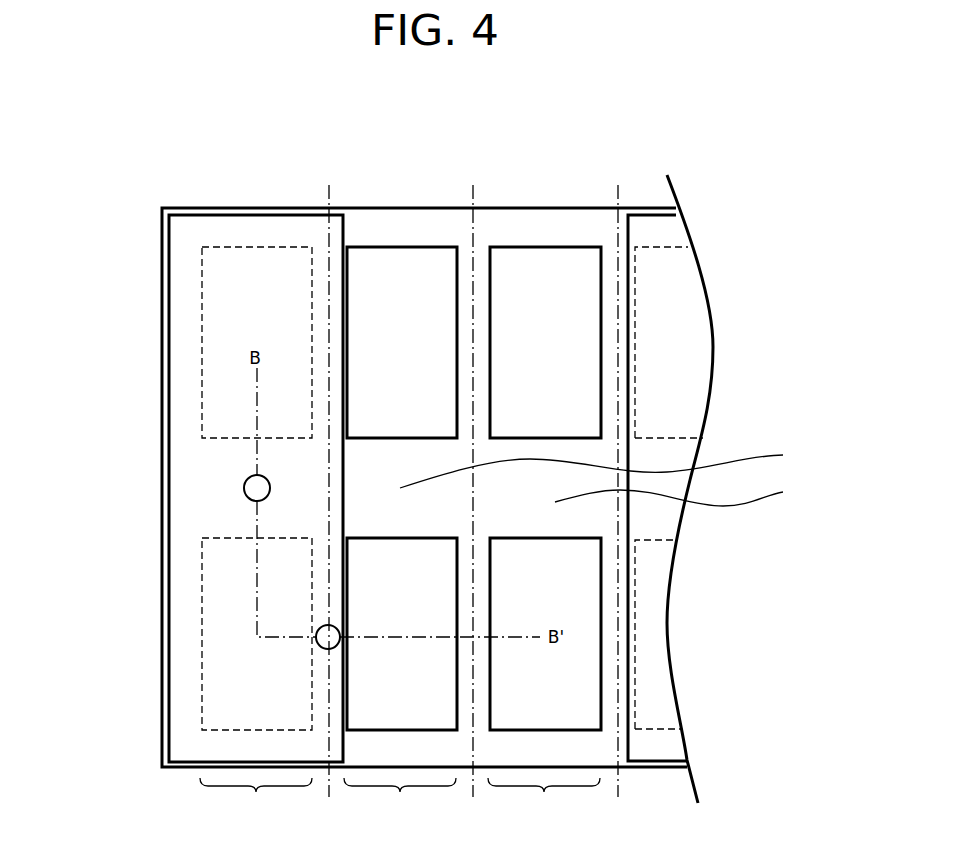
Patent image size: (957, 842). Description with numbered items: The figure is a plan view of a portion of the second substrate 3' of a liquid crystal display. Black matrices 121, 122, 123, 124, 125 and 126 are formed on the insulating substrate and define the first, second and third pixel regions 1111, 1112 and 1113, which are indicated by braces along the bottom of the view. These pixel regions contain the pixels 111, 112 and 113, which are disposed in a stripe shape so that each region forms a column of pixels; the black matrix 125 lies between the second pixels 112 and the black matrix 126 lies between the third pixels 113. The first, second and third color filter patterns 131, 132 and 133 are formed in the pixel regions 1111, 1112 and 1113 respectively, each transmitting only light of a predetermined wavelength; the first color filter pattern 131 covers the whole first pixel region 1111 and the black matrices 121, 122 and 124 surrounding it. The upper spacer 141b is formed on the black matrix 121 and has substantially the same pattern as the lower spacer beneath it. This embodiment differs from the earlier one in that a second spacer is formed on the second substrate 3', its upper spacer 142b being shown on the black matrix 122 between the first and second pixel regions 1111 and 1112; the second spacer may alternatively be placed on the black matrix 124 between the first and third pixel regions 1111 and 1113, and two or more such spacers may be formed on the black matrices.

The second substrate 3' is at (78, 108).
The pixel 111 is at (240, 322).
The second pixel 112 is at (383, 323).
The third pixel 113 is at (528, 323).
The black matrix 121 is at (213, 453).
The black matrix 122 is at (320, 258).
The black matrix 123 is at (463, 258).
The black matrix 124 is at (608, 258).
The black matrix 125 is at (611, 464).
The black matrix 126 is at (689, 493).
The first color filter pattern 131 is at (212, 207).
The second color filter pattern 132 is at (358, 262).
The third color filter pattern 133 is at (503, 262).
The upper spacer 141b is at (243, 482).
The upper spacer 142b is at (316, 636).
The first pixel region 1111 is at (256, 795).
The second pixel region 1112 is at (400, 795).
The third pixel region 1113 is at (544, 795).